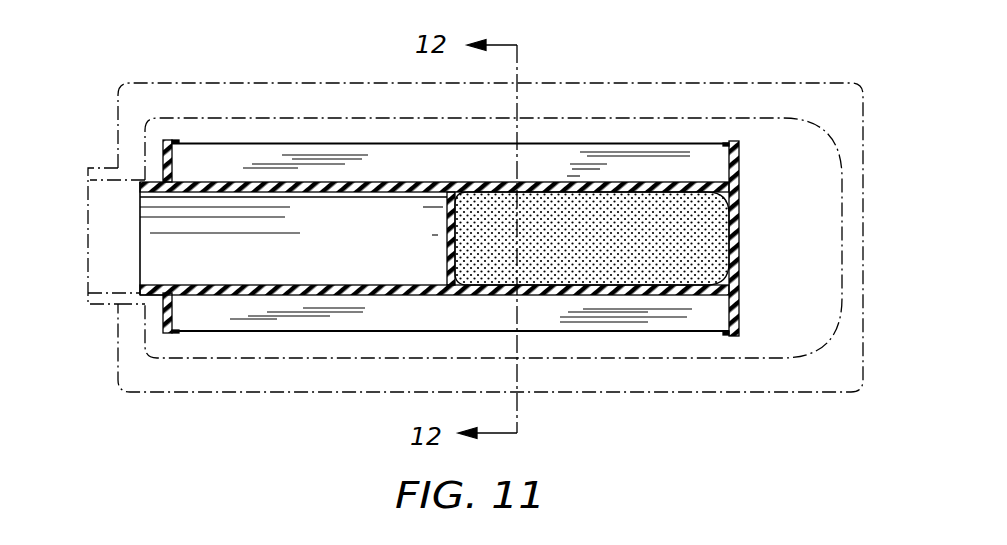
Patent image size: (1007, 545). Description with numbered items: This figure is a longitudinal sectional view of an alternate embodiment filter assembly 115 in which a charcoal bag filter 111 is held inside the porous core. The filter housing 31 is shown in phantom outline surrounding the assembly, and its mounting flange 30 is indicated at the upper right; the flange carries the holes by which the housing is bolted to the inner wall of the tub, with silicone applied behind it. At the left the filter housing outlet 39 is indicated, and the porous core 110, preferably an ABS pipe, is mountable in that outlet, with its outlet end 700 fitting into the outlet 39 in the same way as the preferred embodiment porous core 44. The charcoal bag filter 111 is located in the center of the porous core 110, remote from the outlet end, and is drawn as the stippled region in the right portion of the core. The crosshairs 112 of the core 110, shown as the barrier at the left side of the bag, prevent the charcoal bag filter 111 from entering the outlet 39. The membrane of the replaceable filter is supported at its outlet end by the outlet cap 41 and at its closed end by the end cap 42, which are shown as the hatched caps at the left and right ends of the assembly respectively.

The mounting flange 30 is at (832, 102).
The filter housing 31 is at (813, 190).
The filter housing outlet 39 is at (95, 308).
The outlet cap 41 is at (163, 153).
The end cap 42 is at (739, 257).
The porous core 44 is at (623, 297).
The porous core 110 is at (697, 297).
The charcoal bag filter 111 is at (533, 213).
The crosshairs 112 is at (447, 217).
The filter assembly 115 is at (622, 178).
The outlet end 700 is at (147, 297).